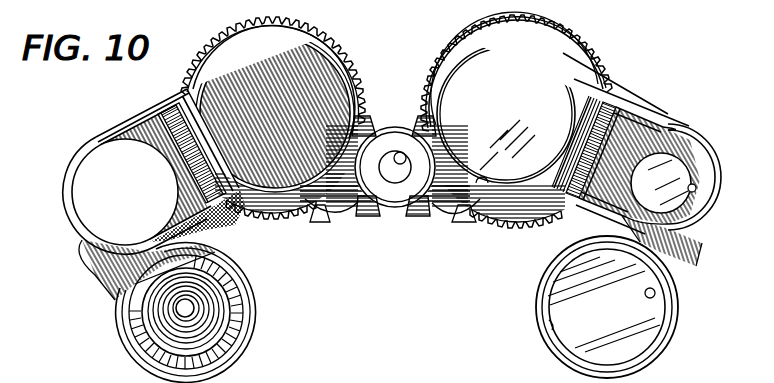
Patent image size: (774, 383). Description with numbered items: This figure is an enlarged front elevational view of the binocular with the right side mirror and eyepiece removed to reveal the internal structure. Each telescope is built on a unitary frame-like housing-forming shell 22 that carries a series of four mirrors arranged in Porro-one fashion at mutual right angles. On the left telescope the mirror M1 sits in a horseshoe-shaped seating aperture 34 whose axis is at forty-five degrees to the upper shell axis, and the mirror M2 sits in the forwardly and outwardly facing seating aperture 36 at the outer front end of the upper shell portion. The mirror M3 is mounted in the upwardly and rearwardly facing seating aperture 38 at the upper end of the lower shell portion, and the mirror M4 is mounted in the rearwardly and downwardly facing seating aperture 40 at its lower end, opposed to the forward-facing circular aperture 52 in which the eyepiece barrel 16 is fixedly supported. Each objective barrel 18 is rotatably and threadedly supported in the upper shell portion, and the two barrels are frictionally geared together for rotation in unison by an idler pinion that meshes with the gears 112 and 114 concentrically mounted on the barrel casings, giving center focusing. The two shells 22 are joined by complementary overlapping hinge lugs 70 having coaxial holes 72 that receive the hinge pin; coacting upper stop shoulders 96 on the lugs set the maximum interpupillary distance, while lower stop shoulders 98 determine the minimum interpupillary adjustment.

The gear 112 is at (328, 45).
The gear 114 is at (456, 46).
The objective barrel 18 is at (180, 82).
The mirror M1 is at (312, 92).
The mirror M2 is at (80, 198).
The mirror M3 is at (686, 166).
The mirror M4 is at (632, 312).
The upper stop shoulders 96 is at (420, 118).
The lower stop shoulders 98 is at (410, 218).
The coaxial holes 72 is at (405, 157).
The hinge lugs 70 is at (336, 222).
The seating aperture 34 is at (297, 220).
The shell 22 is at (275, 208).
The eyepiece barrel 16 is at (112, 339).
The seating aperture 36 is at (90, 234).
The seating aperture 38 is at (697, 190).
The seating aperture 40 is at (656, 294).
The circular aperture 52 is at (550, 325).